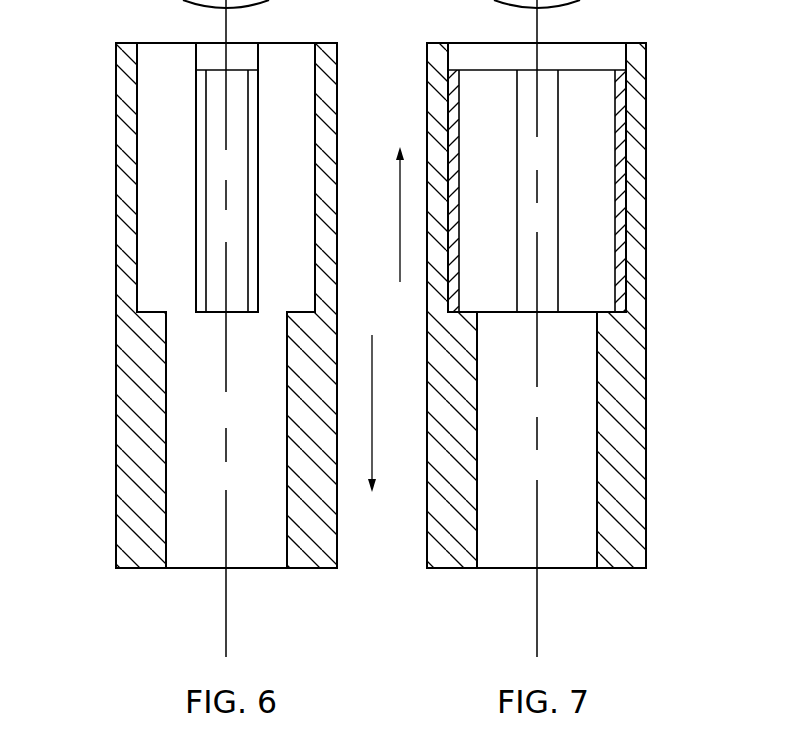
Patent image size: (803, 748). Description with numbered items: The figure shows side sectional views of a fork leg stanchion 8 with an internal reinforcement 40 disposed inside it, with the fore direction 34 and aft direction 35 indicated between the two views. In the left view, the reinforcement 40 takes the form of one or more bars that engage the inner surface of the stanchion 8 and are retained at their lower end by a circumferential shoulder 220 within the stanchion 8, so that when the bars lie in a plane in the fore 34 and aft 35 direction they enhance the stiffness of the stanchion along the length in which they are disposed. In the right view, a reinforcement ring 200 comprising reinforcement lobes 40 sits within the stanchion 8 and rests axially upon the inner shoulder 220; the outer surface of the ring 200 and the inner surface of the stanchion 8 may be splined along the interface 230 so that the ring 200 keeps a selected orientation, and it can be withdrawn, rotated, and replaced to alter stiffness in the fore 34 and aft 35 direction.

In FIG. 6, the stanchion 8 is at (143, 361).
In FIG. 7, the stanchion 8 is at (584, 305).
In FIG. 6, the reinforcement 40 is at (215, 154).
In FIG. 7, the reinforcement 40 is at (597, 156).
In FIG. 6, the circumferential shoulder 220 is at (154, 300).
In FIG. 7, the circumferential shoulder 220 is at (605, 297).
In FIG. 7, the interface 230 is at (631, 106).
In FIG. 7, the reinforcement ring 200 is at (621, 166).
In FIG. 6, the aft direction 35 is at (400, 229).
In FIG. 6, the fore direction 34 is at (372, 357).